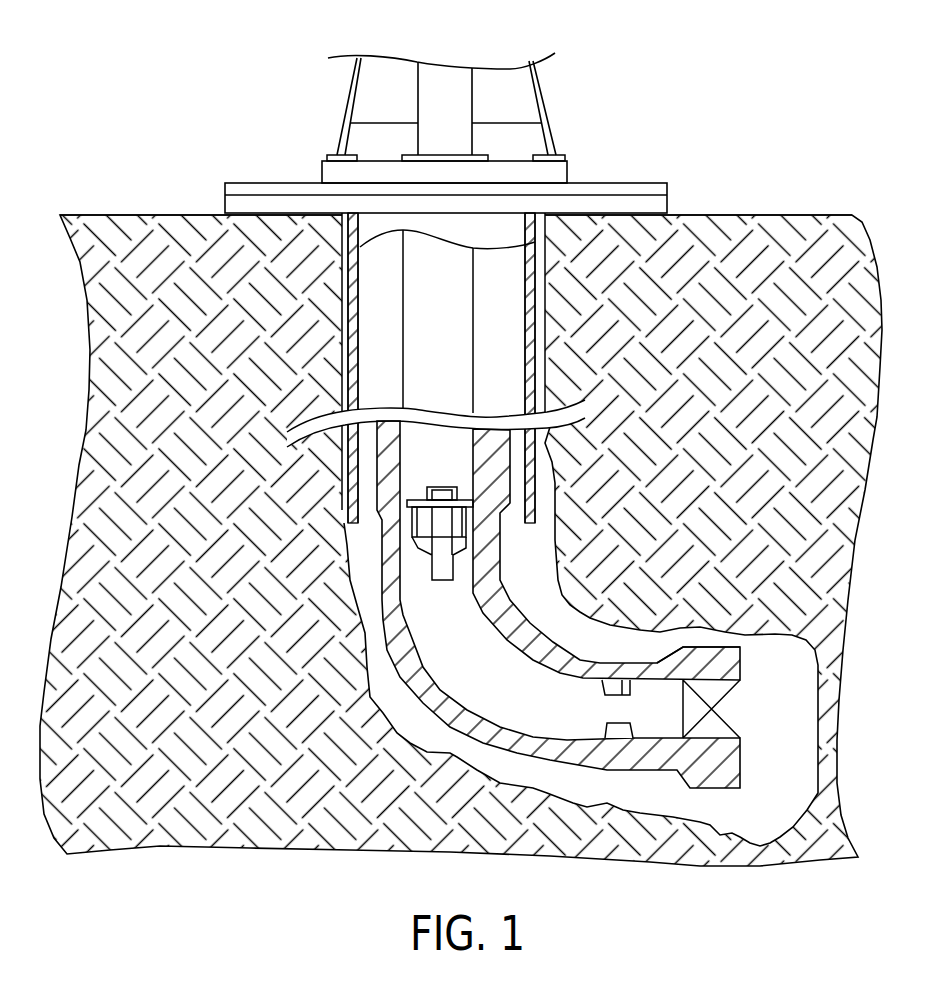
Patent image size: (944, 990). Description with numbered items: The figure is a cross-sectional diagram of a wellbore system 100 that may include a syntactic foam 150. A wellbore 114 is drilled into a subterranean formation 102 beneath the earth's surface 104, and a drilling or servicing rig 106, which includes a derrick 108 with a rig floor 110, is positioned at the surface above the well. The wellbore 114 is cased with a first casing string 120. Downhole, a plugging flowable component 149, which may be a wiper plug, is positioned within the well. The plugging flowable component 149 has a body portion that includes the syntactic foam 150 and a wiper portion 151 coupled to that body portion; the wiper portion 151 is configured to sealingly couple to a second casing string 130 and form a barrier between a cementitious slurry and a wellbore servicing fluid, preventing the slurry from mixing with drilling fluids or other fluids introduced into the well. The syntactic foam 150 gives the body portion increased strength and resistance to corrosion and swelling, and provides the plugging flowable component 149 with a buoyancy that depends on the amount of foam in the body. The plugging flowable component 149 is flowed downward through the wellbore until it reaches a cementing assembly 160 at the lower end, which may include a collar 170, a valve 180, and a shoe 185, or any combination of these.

The wellbore system 100 is at (614, 362).
The subterranean formation 102 is at (286, 377).
The earth's surface 104 is at (185, 197).
The drilling or servicing rig 106 is at (614, 85).
The derrick 108 is at (316, 109).
The rig floor 110 is at (627, 159).
The wellbore 114 is at (390, 337).
The first casing string 120 is at (324, 475).
The second casing string 130 is at (557, 658).
The plugging flowable component 149 is at (421, 475).
The syntactic foam 150 is at (443, 555).
The wiper portion 151 is at (425, 548).
The cementing assembly 160 is at (626, 466).
The collar 170 is at (620, 683).
The valve 180 is at (738, 715).
The shoe 185 is at (697, 647).